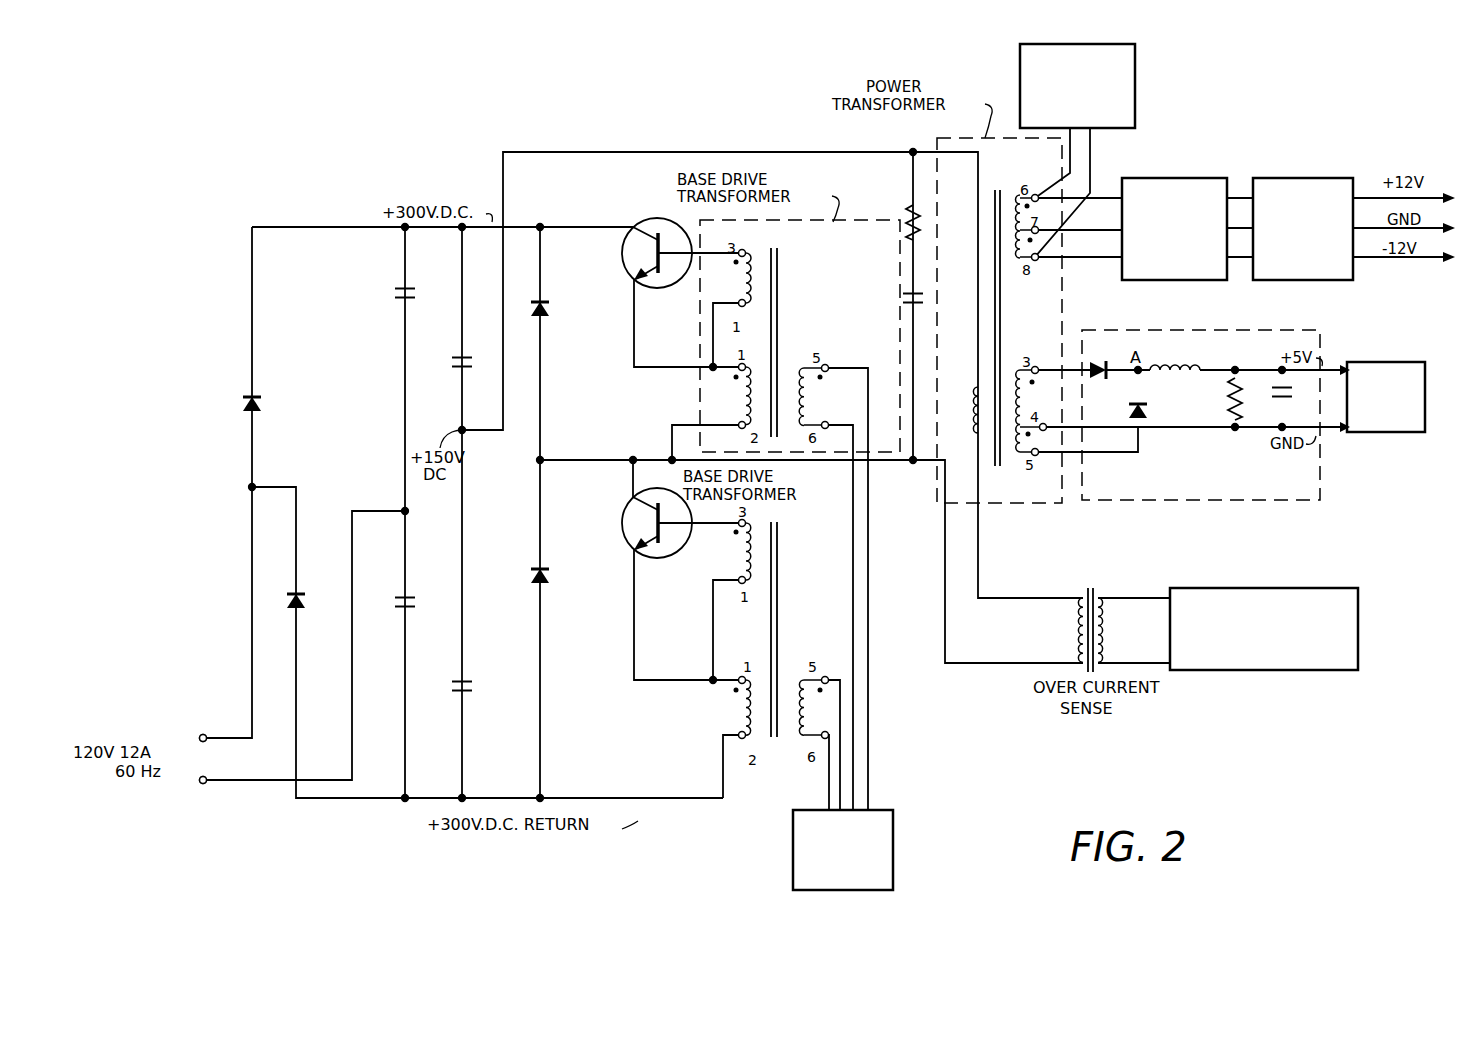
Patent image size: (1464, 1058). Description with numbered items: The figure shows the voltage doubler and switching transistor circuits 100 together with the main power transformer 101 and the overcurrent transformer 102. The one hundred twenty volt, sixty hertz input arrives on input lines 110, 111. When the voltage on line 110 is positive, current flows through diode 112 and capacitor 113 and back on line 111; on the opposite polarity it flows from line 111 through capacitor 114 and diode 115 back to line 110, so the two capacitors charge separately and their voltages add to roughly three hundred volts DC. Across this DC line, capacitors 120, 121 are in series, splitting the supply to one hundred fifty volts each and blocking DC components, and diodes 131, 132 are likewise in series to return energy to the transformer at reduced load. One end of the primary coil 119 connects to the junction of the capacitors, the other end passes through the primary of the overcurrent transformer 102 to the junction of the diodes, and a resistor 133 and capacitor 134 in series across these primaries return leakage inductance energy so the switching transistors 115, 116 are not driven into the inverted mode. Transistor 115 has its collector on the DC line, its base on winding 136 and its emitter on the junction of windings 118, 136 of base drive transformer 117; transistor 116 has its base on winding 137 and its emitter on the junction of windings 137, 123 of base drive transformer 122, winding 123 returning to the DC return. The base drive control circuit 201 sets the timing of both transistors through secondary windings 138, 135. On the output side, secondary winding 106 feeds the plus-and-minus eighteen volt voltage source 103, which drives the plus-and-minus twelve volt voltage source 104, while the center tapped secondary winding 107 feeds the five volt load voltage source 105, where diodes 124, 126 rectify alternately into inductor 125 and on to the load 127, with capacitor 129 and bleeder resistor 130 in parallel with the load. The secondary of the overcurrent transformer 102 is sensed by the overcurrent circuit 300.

The voltage doubler and switching transistor circuits 100 is at (320, 190).
The main power transformer 101 is at (936, 138).
The overcurrent transformer 102 is at (1089, 589).
The ±18V voltage source 103 is at (1161, 178).
The ±12V voltage source 104 is at (1313, 178).
The +5V load voltage source 105 is at (1258, 329).
The secondary winding 106 is at (1016, 210).
The center tapped secondary winding 107 is at (1013, 373).
The input line 110 is at (206, 732).
The input line 111 is at (203, 786).
The diode 112 is at (261, 404).
The capacitor 113 is at (397, 290).
The capacitor 114 is at (413, 598).
The switching transistor 115 is at (300, 596).
The switching transistor 116 is at (624, 541).
The base drive transformer 117 is at (788, 282).
The winding 118 is at (742, 402).
The primary coil 119 is at (972, 407).
The capacitor 120 is at (470, 682).
The capacitor 121 is at (460, 356).
The base drive transformer 122 is at (769, 630).
The winding 123 is at (744, 720).
The diode 124 is at (1112, 347).
The inductor 125 is at (1158, 366).
The diode 126 is at (1175, 398).
The load 127 is at (1405, 432).
The capacitor 129 is at (1278, 383).
The resistor 130 is at (1228, 394).
The diode 131 is at (549, 312).
The diode 132 is at (549, 578).
The resistor 133 is at (906, 210).
The capacitor 134 is at (906, 294).
The secondary winding 135 is at (802, 680).
The winding 136 is at (742, 292).
The winding 137 is at (744, 555).
The secondary winding 138 is at (812, 398).
The base drive control circuit 201 is at (826, 893).
The overcurrent circuit 300 is at (1257, 588).